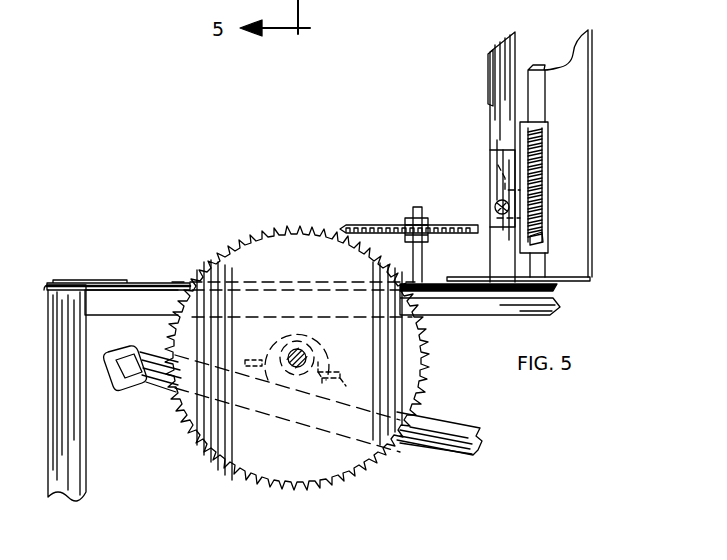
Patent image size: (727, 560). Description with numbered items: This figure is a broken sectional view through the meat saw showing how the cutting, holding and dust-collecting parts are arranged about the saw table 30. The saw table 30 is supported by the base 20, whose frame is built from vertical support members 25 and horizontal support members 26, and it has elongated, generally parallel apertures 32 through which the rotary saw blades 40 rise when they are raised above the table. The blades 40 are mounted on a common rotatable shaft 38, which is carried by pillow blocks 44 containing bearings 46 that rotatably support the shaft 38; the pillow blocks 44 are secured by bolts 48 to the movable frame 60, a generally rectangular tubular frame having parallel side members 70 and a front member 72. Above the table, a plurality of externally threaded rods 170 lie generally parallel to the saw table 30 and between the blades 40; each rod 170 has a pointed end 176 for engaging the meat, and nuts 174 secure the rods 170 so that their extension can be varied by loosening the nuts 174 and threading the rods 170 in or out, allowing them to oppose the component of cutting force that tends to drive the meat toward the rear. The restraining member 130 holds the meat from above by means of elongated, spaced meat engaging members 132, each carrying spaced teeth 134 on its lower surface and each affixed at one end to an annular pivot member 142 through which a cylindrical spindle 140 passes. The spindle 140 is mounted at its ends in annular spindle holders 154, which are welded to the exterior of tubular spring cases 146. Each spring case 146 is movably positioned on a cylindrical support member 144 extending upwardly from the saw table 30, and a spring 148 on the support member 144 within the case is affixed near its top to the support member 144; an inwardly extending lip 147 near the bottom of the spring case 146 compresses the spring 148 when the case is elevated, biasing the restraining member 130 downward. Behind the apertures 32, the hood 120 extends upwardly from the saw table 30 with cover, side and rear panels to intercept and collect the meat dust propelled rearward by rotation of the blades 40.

The base 20 is at (68, 322).
The vertical support members 25 is at (48, 394).
The horizontal support members 26 is at (119, 296).
The saw table 30 is at (96, 282).
The apertures 32 is at (161, 281).
The shaft 38 is at (291, 370).
The rotary saw blades 40 is at (226, 472).
The pillow blocks 44 is at (346, 372).
The bearings 46 is at (312, 357).
The bolts 48 is at (248, 360).
The movable frame 60 is at (436, 446).
The side members 70 is at (447, 432).
The front member 72 is at (106, 380).
The hood 120 is at (594, 90).
The restraining member 130 is at (504, 36).
The meat engaging members 132 is at (467, 196).
The teeth 134 is at (486, 106).
The spindle 140 is at (507, 216).
The pivot member 142 is at (489, 206).
The support members 144 is at (536, 92).
The spring case 146 is at (552, 256).
The lip 147 is at (548, 238).
The spring 148 is at (545, 172).
The spindle holders 154 is at (496, 166).
The rods 170 is at (390, 224).
The nuts 174 is at (417, 216).
The pointed ends 176 is at (338, 226).